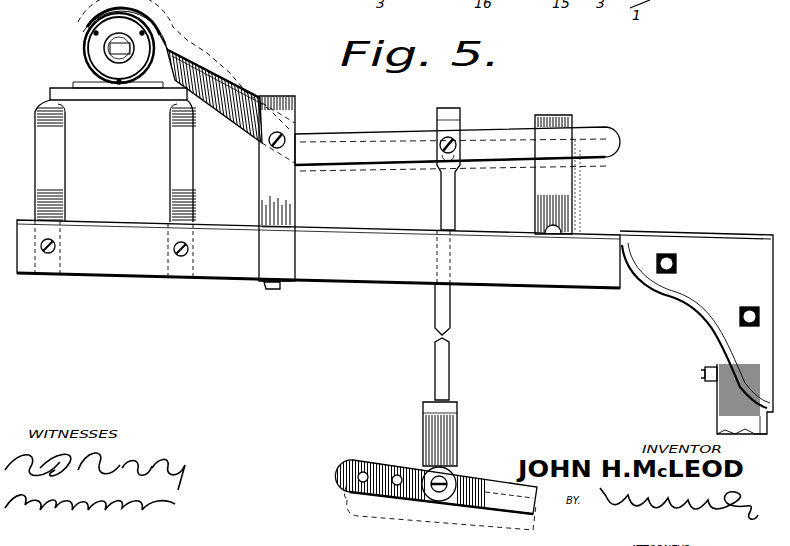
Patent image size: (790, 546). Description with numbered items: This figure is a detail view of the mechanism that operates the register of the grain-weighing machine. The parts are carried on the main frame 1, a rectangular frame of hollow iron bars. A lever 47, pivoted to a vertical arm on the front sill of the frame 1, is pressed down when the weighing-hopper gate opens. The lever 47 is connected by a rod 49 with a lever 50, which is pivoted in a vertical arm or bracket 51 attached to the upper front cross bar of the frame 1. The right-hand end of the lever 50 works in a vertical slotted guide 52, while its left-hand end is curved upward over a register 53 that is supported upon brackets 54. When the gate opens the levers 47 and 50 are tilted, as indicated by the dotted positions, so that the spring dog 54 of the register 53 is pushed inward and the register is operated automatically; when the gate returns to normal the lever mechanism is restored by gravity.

The frame 1 is at (717, 402).
The lever 47 is at (482, 480).
The rod 49 is at (450, 320).
The lever 50 is at (457, 149).
The vertical arm or bracket 51 is at (295, 206).
The vertical slotted guide 52 is at (535, 204).
The register 53 is at (96, 37).
The brackets 54 is at (155, 26).